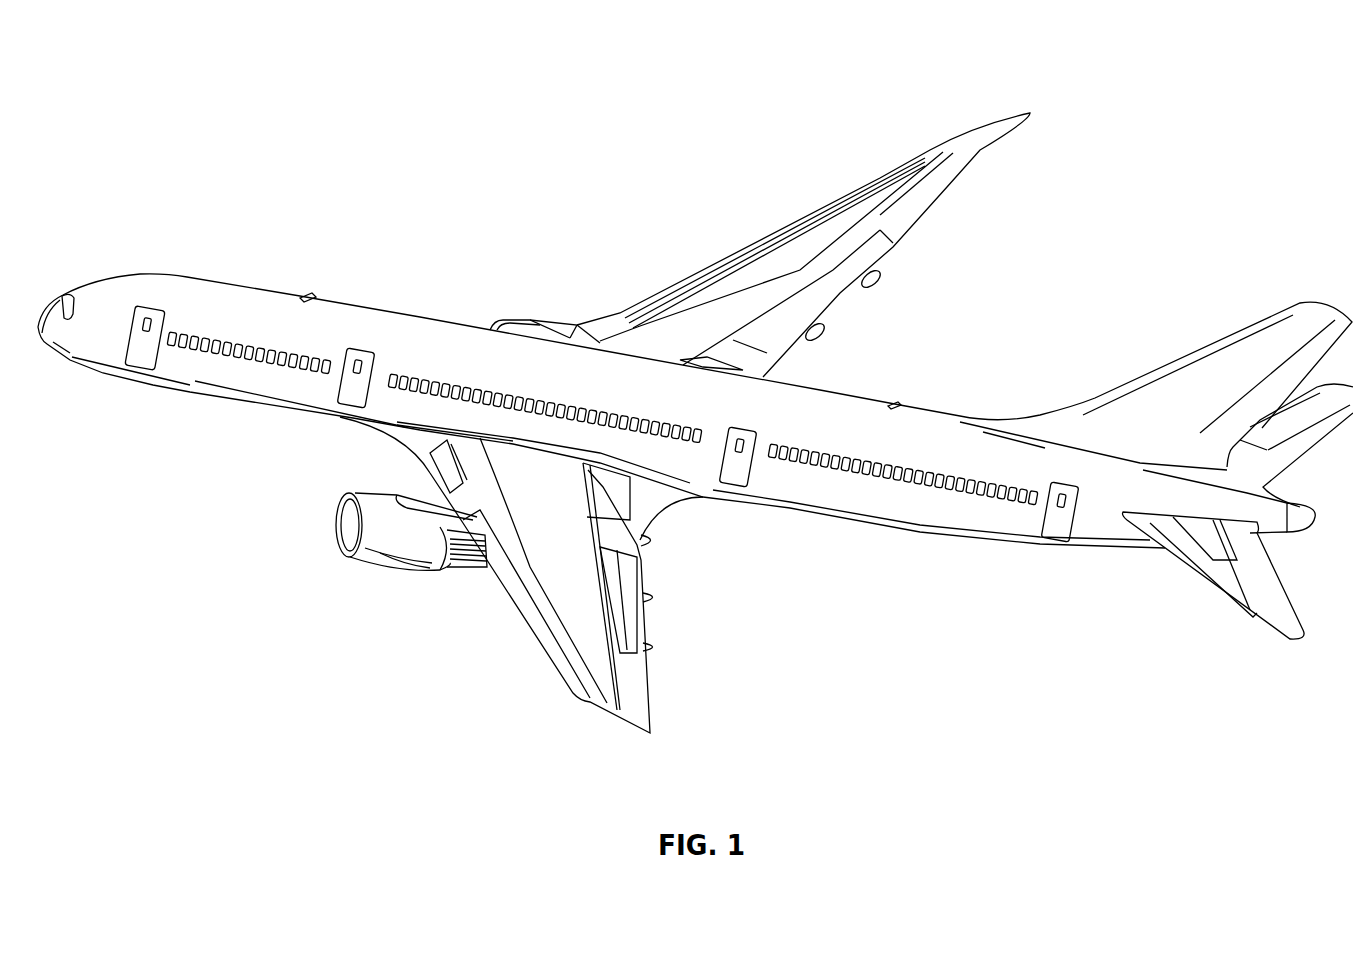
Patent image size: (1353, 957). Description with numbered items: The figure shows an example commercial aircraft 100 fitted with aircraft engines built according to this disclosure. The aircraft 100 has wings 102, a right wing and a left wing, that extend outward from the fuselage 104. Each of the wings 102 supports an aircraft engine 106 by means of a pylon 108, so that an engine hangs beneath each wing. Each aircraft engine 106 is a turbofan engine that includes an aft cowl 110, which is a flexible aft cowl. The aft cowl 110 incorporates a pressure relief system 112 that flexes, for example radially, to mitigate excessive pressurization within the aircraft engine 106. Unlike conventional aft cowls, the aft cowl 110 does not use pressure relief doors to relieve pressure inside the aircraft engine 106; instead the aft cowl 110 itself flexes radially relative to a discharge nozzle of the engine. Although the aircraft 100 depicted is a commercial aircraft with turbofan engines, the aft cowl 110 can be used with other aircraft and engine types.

The aircraft 100 is at (136, 100).
The wings 102 is at (815, 213).
The fuselage 104 is at (685, 462).
The aircraft engine 106 is at (513, 320).
The pylon 108 is at (557, 322).
The aft cowl 110 is at (460, 574).
The pressure relief system 112 is at (412, 544).